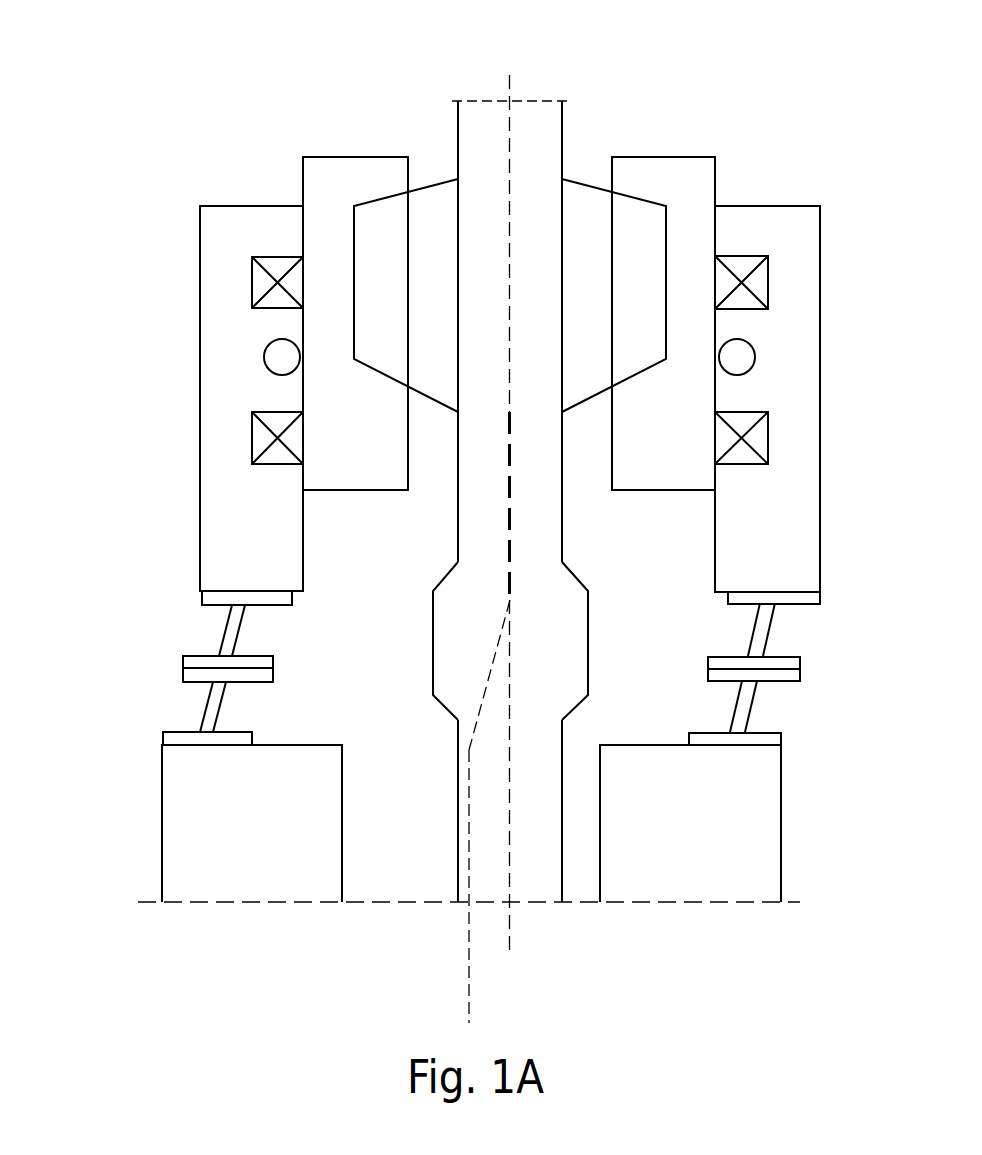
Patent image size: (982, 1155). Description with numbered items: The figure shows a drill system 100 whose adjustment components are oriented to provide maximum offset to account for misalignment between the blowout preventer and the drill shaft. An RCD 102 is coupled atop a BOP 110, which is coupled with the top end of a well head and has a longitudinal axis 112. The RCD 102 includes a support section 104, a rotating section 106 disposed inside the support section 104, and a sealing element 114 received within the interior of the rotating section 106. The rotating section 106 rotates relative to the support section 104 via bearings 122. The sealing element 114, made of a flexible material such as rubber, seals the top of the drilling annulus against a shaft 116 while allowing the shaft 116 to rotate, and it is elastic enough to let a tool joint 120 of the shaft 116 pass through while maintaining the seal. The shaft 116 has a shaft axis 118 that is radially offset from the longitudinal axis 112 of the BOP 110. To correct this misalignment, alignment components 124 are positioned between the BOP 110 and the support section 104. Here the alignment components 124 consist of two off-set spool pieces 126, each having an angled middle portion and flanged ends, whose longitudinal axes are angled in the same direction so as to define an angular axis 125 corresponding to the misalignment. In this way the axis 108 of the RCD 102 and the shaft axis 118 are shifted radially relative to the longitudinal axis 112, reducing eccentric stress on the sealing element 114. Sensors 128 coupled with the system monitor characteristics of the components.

The drill system 100 is at (610, 62).
The RCD 102 is at (782, 164).
The support section 104 is at (212, 206).
The rotating section 106 is at (322, 157).
The axis of the RCD 108 is at (509, 150).
The BOP 110 is at (162, 812).
The longitudinal axis 112 is at (470, 1010).
The sealing element 114 is at (420, 188).
The shaft 116 is at (458, 872).
The shaft axis 118 is at (509, 533).
The tool joint 120 is at (433, 680).
The bearings 122 is at (745, 467).
The alignment components 124 is at (176, 632).
The angular axis 125 is at (489, 677).
The off-set spool pieces 126 is at (207, 705).
The sensors 128 is at (264, 353).